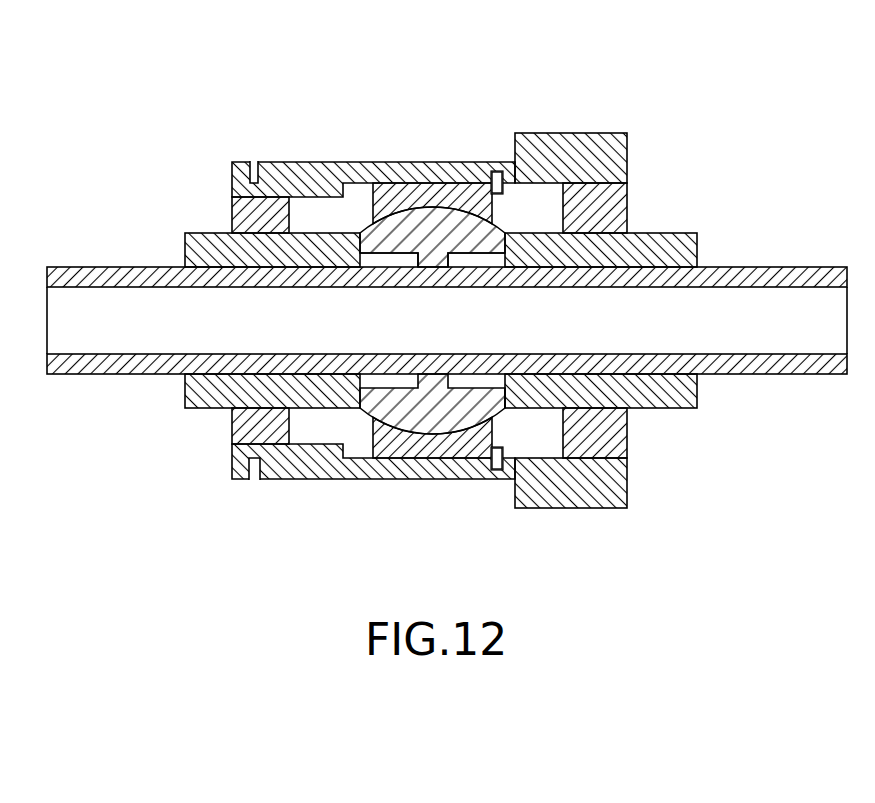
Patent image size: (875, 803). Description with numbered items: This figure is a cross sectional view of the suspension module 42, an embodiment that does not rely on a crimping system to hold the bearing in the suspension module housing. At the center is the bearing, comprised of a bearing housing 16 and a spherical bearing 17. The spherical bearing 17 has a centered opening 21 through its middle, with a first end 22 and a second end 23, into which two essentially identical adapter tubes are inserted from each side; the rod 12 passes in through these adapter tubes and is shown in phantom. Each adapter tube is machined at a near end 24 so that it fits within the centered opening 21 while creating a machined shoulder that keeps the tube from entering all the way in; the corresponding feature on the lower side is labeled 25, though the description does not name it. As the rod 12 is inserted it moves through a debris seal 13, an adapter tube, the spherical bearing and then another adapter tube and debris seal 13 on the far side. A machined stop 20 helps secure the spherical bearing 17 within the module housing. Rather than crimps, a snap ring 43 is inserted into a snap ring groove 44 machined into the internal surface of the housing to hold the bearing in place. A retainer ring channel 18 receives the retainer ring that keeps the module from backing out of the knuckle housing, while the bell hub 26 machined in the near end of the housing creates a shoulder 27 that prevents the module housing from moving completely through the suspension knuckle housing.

The rod 12 is at (797, 267).
The debris seal 13 is at (245, 217).
The bearing housing 16 is at (473, 190).
The spherical bearing 17 is at (436, 222).
The retainer ring channel 18 is at (255, 162).
The machined stop 20 is at (373, 206).
The centered opening 21 is at (455, 393).
The first end 22 is at (513, 242).
The second end 23 is at (351, 243).
The near end 24 is at (418, 262).
The lower ball left shoulder 25 is at (358, 394).
The bell hub 26 is at (613, 135).
The shoulder 27 is at (513, 493).
The suspension module 42 is at (712, 122).
The snap ring 43 is at (491, 152).
The snap ring groove 44 is at (498, 172).